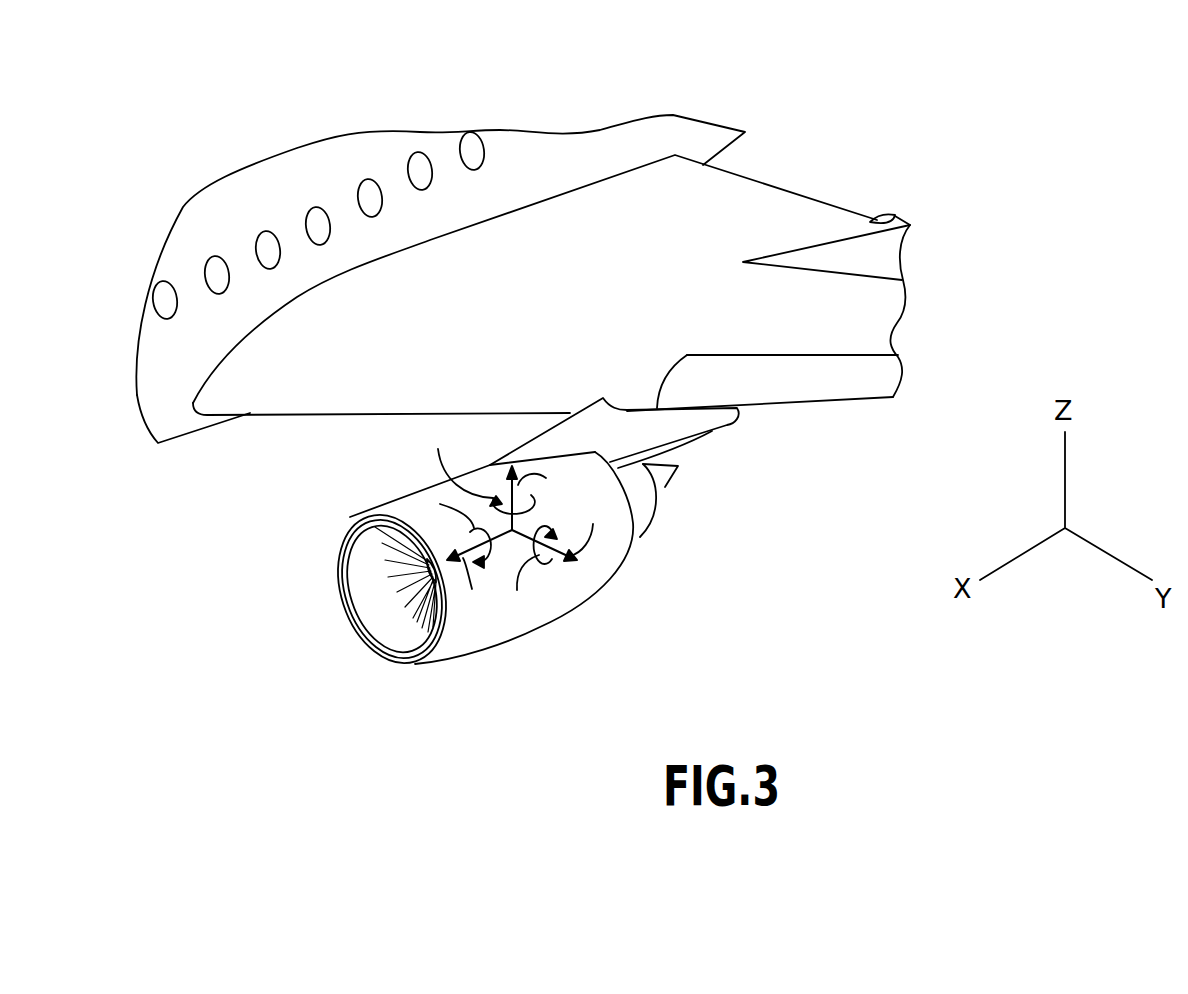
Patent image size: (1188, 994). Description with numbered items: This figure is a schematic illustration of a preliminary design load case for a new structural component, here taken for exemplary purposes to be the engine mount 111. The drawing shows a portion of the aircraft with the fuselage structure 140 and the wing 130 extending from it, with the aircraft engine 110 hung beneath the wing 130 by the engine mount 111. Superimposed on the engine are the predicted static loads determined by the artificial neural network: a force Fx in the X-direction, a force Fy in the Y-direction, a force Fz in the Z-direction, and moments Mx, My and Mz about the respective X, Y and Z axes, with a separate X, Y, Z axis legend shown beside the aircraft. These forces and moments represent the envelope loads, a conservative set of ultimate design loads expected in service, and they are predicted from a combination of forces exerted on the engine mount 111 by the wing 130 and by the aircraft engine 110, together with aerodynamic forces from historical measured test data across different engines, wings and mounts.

The aircraft engine 110 is at (362, 627).
The engine mount 111 is at (700, 441).
The wing 130 is at (775, 188).
The fuselage structure 140 is at (568, 160).